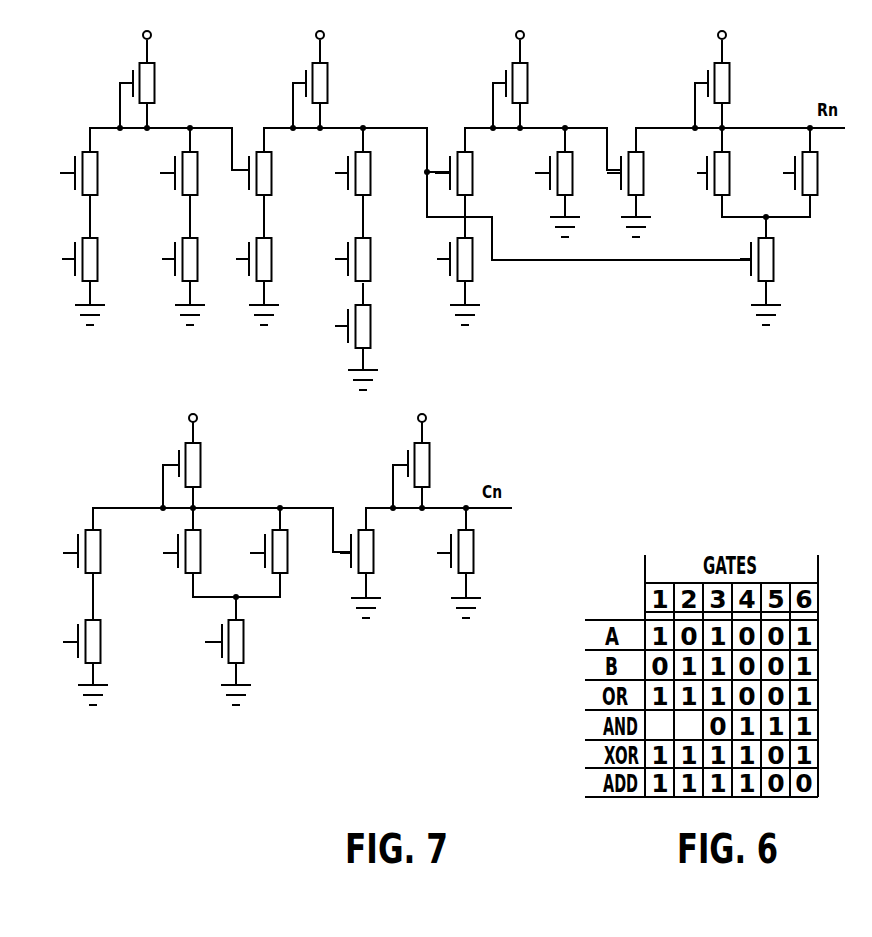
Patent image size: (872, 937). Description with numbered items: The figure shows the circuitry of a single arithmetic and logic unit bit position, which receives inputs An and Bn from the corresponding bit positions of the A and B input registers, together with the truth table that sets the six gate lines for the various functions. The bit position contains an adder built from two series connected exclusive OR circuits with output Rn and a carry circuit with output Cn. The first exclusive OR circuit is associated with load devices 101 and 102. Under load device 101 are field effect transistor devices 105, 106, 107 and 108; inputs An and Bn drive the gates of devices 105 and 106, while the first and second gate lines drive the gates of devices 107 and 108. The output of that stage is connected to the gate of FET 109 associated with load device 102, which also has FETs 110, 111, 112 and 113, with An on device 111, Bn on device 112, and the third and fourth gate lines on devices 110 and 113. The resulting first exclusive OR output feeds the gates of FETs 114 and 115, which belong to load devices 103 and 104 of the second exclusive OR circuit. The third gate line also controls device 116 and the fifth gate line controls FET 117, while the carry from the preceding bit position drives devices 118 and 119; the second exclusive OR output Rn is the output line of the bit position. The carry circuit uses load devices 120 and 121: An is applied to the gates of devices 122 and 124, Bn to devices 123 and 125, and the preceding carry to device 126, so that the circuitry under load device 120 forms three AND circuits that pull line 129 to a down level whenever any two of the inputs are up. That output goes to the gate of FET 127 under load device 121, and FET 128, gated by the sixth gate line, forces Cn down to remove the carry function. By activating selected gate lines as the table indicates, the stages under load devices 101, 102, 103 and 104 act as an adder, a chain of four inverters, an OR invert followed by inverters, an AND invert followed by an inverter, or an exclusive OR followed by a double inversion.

The load device 101 is at (155, 83).
The load device 102 is at (328, 83).
The load device 103 is at (528, 83).
The load device 104 is at (730, 83).
The field effect transistor device 105 is at (100, 163).
The field effect transistor device 106 is at (199, 182).
The field effect transistor device 107 is at (100, 249).
The field effect transistor device 108 is at (200, 249).
The field effect transistor 109 is at (273, 163).
The field effect transistor 110 is at (273, 249).
The field effect transistor 111 is at (372, 163).
The field effect transistor 112 is at (372, 249).
The field effect transistor 113 is at (372, 316).
The field effect transistor 114 is at (474, 163).
The field effect transistor 115 is at (775, 249).
The field effect transistor device 116 is at (474, 279).
The field effect transistor 117 is at (819, 160).
The field effect transistor device 118 is at (573, 182).
The field effect transistor device 119 is at (731, 160).
The load device 120 is at (203, 456).
The load device 121 is at (430, 456).
The field effect transistor device 122 is at (102, 542).
The field effect transistor device 123 is at (102, 632).
The field effect transistor device 124 is at (202, 542).
The field effect transistor device 125 is at (288, 542).
The field effect transistor device 126 is at (245, 632).
The field effect transistor 127 is at (374, 542).
The field effect transistor device 128 is at (474, 542).
The line 129 is at (303, 508).